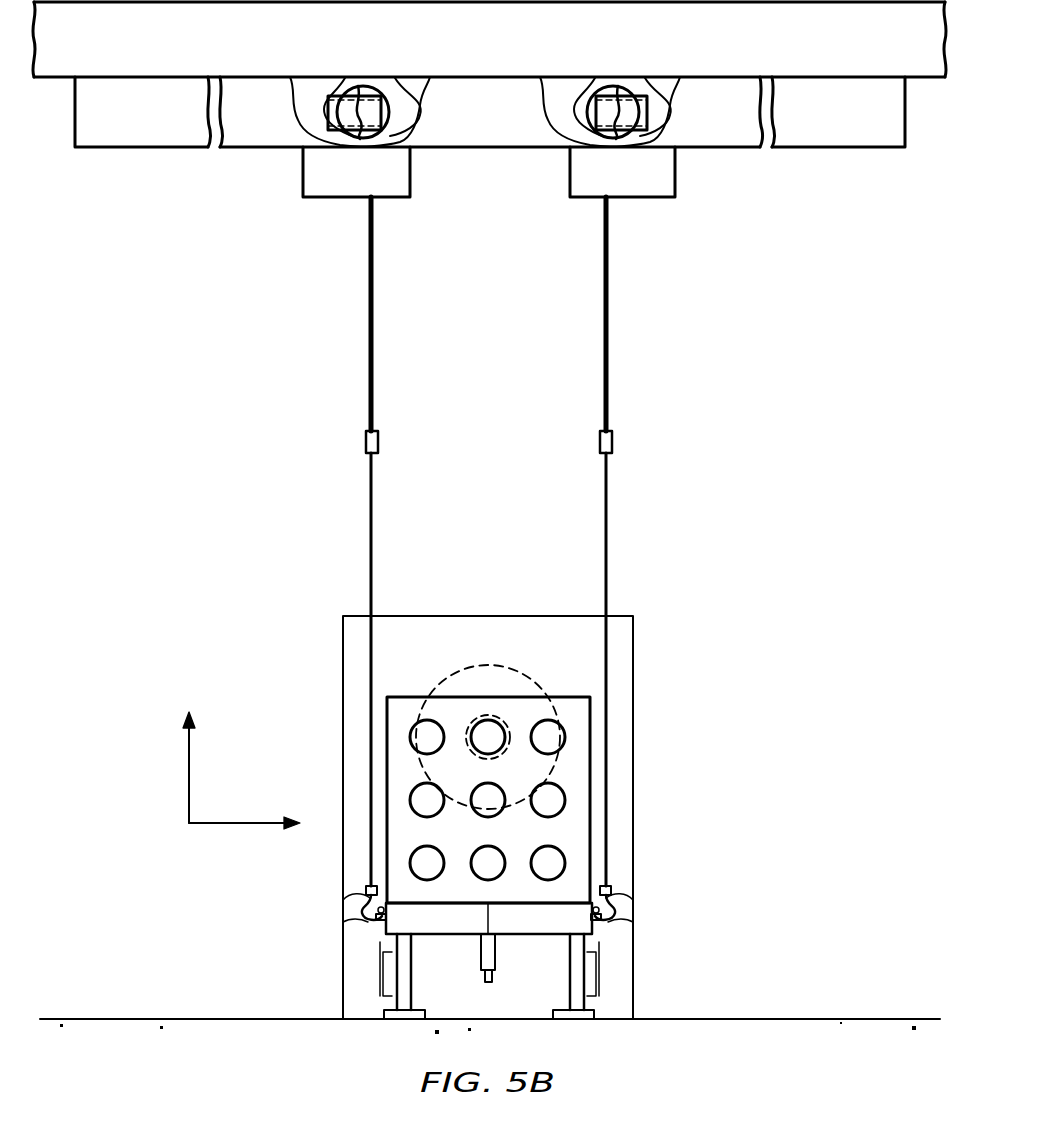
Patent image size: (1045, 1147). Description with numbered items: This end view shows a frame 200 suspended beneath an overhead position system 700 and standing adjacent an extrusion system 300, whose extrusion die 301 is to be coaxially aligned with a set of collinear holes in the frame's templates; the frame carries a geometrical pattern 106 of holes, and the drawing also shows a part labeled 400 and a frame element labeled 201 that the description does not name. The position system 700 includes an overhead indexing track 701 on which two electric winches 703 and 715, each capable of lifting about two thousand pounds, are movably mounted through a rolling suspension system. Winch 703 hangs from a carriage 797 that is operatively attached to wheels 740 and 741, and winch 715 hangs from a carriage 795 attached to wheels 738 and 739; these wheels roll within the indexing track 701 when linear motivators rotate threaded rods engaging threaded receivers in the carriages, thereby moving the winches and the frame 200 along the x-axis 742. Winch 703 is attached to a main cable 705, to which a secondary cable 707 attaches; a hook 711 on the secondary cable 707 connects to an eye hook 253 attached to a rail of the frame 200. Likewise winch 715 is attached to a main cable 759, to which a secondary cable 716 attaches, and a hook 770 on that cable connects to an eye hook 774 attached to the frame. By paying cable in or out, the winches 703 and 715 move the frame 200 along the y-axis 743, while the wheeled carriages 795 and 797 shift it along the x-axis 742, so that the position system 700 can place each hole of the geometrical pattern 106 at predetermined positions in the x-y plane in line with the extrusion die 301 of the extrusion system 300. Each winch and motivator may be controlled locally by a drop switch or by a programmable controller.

The position system 700 is at (252, 225).
The indexing track 701 is at (822, 147).
The winch 703 is at (675, 170).
The main cable 705 is at (608, 322).
The secondary cable 707 is at (608, 492).
The hook 711 is at (617, 900).
The winch 715 is at (303, 170).
The secondary cable 716 is at (368, 492).
The wheel 738 is at (357, 88).
The wheel 739 is at (383, 100).
The wheel 740 is at (598, 106).
The wheel 741 is at (620, 88).
The x-axis 742 is at (240, 826).
The y-axis 743 is at (188, 770).
The main cable 759 is at (368, 322).
The hook 770 is at (360, 900).
The eye hook 774 is at (372, 920).
The carriage 795 is at (328, 108).
The carriage 797 is at (650, 104).
The extrusion system 300 is at (634, 680).
The extrusion die 301 is at (518, 668).
The speaker array panel 400 is at (404, 684).
The frame 200 is at (458, 920).
The base mount 201 is at (385, 935).
The eye hook 253 is at (612, 925).
The geometrical pattern 106 is at (558, 880).